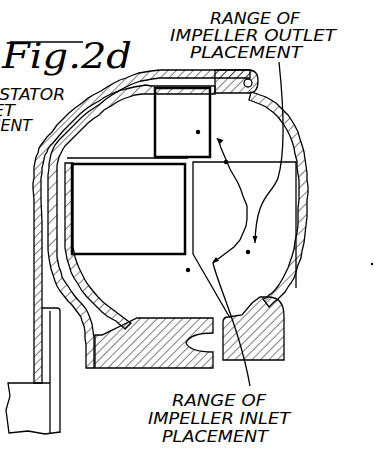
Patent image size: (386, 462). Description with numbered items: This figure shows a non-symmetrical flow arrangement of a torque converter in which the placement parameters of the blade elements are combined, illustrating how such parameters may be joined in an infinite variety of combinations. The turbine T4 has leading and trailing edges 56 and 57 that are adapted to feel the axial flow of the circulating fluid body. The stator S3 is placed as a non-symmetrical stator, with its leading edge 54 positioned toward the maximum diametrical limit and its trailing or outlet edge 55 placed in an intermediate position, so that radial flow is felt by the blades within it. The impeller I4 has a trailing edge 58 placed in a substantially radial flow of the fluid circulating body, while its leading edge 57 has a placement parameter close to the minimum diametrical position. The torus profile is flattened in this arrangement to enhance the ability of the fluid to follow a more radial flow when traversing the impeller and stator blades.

The leading edge 54 is at (112, 157).
The trailing edge 55 is at (103, 255).
The leading edge 56 is at (207, 122).
The trailing edge 57 is at (155, 132).
The trailing edge 58 is at (263, 152).
The turbine T4 is at (177, 112).
The stator S3 is at (148, 230).
The impeller I4 is at (256, 289).